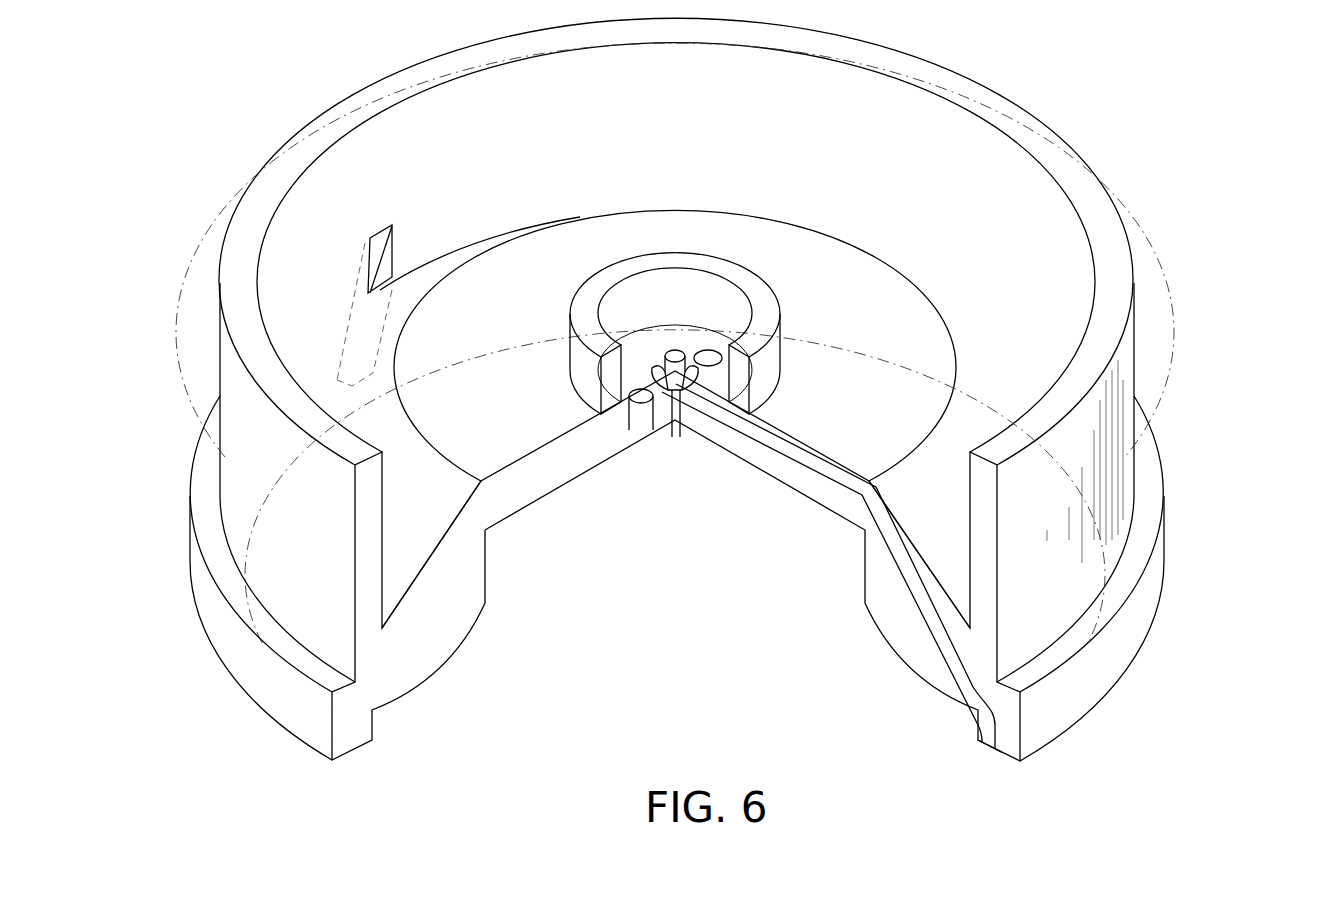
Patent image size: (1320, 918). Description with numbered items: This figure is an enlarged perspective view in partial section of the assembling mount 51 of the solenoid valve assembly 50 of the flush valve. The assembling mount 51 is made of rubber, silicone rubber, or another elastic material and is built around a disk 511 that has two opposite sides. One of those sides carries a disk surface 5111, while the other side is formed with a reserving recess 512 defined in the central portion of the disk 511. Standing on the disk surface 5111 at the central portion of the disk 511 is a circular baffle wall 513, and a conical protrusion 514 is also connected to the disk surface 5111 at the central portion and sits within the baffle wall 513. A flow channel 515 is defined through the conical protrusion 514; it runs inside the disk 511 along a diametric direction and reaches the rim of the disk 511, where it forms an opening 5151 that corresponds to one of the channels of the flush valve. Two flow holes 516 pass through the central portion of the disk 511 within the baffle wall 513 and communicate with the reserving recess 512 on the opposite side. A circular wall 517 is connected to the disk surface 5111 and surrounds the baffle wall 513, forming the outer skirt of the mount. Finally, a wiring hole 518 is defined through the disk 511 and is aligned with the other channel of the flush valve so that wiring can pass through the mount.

The solenoid valve assembly 50 is at (240, 150).
The assembling mount 51 is at (1155, 415).
The disk 511 is at (933, 265).
The disk surface 5111 is at (917, 517).
The reserving recess 512 is at (485, 567).
The baffle wall 513 is at (597, 333).
The conical protrusion 514 is at (648, 365).
The flow channel 515 is at (790, 470).
The opening 5151 is at (990, 748).
The flow holes 516 is at (703, 350).
The circular wall 517 is at (1098, 233).
The wiring hole 518 is at (357, 293).